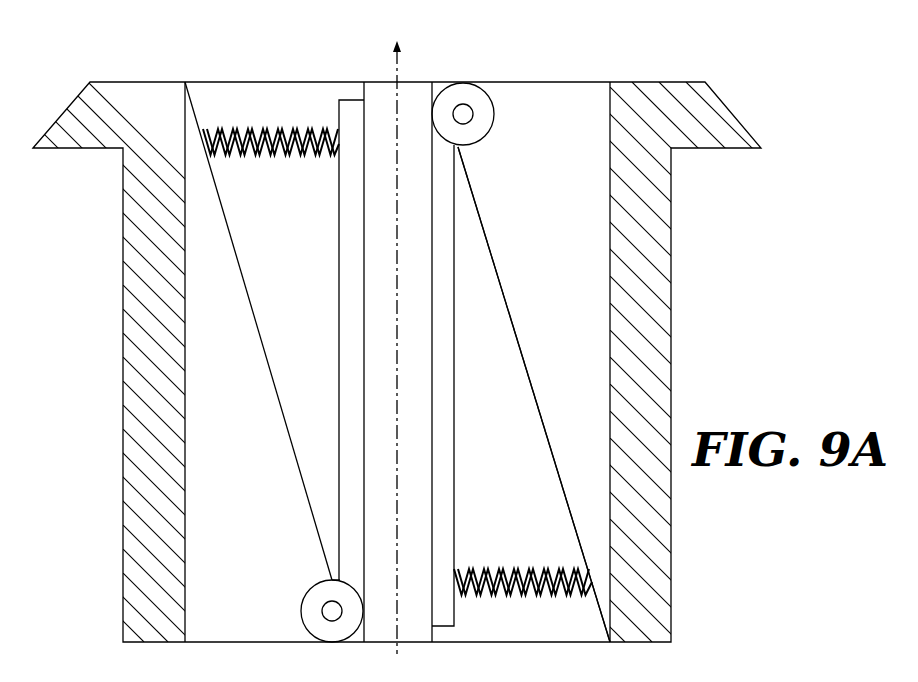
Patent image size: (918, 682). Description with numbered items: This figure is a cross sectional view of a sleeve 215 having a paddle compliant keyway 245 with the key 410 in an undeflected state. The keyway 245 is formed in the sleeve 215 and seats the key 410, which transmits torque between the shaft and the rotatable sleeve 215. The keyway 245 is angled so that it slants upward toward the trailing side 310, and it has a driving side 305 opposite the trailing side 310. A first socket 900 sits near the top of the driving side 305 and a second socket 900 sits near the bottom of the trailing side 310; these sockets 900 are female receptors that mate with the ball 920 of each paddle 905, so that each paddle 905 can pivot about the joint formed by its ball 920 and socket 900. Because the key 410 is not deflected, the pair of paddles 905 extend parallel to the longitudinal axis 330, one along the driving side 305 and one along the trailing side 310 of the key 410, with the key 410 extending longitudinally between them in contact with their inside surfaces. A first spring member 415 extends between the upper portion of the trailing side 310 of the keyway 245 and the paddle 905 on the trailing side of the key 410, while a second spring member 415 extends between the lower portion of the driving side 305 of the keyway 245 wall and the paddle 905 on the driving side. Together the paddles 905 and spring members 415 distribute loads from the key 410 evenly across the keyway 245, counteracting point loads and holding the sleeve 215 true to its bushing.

The sleeve 215 is at (647, 105).
The keyway 245 is at (481, 202).
The driving side 305 is at (517, 303).
The trailing side 310 is at (268, 387).
The longitudinal axis 330 is at (394, 46).
The key 410 is at (414, 368).
The spring member 415 is at (298, 158).
The socket 900 is at (494, 115).
The paddle 905 is at (349, 263).
The ball 920 is at (463, 97).